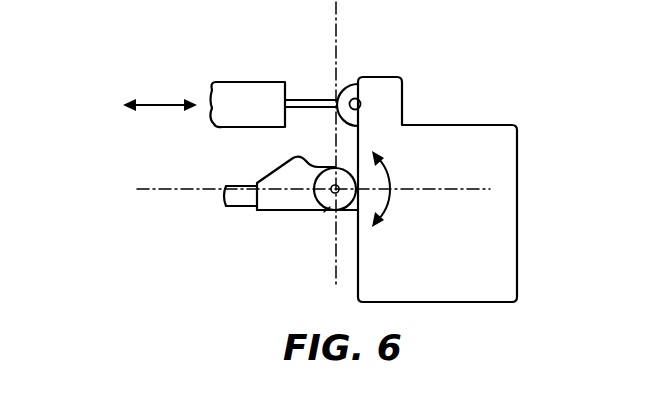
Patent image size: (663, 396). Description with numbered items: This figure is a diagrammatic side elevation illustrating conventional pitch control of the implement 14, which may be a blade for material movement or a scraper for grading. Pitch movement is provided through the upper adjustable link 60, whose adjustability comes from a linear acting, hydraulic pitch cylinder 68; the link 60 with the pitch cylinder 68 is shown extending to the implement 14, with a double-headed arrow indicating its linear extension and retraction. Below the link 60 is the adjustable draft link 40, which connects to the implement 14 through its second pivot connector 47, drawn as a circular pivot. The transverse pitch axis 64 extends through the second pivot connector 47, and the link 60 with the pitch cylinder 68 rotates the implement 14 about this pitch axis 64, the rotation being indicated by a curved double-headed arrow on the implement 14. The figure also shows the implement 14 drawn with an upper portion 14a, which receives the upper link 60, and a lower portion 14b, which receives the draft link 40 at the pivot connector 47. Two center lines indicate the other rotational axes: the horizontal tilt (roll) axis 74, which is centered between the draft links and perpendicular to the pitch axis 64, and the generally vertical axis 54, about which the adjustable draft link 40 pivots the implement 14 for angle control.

The implement 14 is at (468, 121).
The upper pivot portion of body 14a is at (348, 88).
The lower pivot portion of body 14b is at (353, 171).
The draft link 40 is at (295, 216).
The second pivot connector 47 is at (314, 168).
The axis 54 is at (340, 16).
The upper adjustable link 60 is at (228, 78).
The pitch axis 64 is at (323, 213).
The pitch cylinder 68 is at (250, 90).
The tilt axis 74 is at (428, 190).